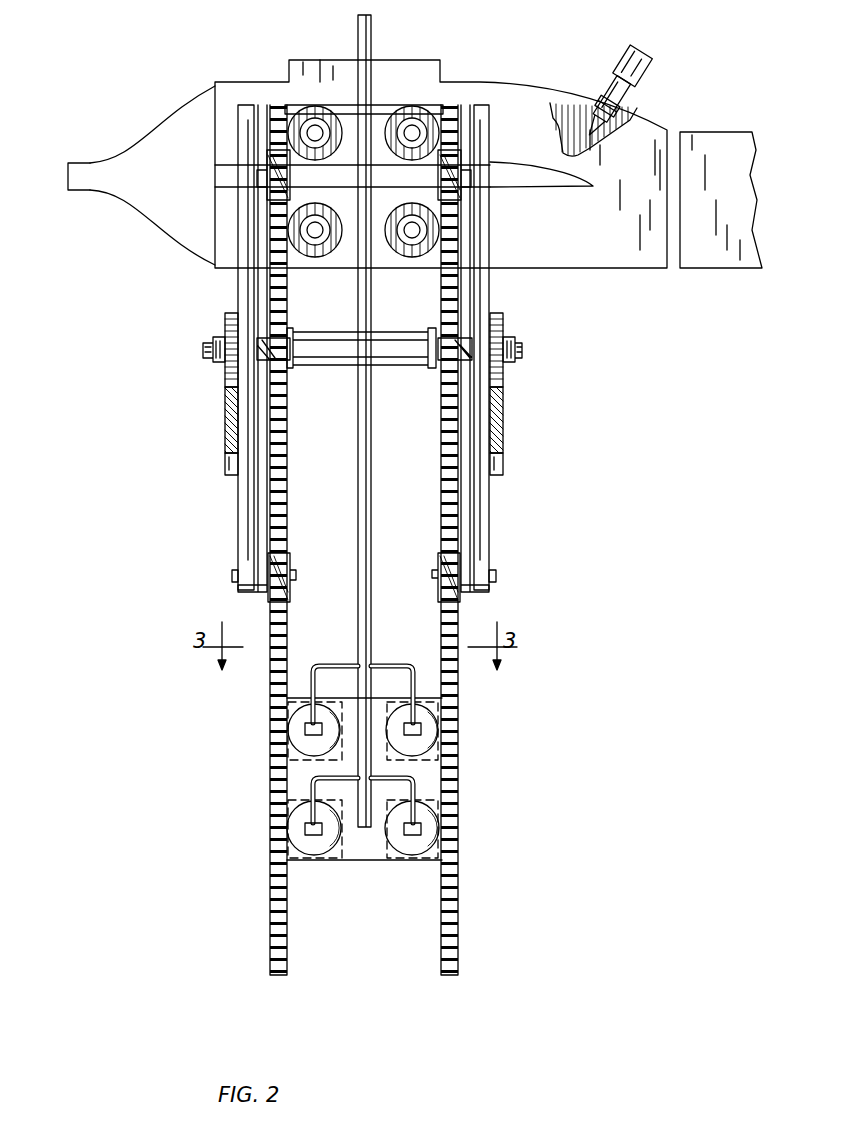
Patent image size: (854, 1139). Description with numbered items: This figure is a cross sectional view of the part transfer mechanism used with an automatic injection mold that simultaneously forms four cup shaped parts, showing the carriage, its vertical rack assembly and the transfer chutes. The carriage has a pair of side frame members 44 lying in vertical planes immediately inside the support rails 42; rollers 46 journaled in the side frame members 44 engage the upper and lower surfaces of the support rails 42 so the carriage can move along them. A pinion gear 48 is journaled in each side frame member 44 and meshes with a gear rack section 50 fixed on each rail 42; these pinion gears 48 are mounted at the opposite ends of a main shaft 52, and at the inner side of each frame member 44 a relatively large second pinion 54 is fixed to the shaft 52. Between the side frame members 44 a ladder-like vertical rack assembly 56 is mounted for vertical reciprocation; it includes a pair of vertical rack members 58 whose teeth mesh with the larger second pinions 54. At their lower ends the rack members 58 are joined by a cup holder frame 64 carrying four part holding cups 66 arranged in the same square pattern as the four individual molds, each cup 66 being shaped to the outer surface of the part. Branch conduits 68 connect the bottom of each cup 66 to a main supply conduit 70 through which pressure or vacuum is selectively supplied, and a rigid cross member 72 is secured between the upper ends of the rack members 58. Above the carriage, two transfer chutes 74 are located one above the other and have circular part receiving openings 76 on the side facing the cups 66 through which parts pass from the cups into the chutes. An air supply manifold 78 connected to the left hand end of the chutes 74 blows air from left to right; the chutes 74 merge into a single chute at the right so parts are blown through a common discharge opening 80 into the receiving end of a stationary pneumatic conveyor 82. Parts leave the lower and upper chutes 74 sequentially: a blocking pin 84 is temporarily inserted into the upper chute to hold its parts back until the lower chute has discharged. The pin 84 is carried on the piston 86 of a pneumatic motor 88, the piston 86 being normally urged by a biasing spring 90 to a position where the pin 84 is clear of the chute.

The support rail 42 is at (226, 432).
The side frame member 44 is at (245, 520).
The roller 46 is at (226, 465).
The pinion gear 48 is at (228, 320).
The gear rack section 50 is at (226, 407).
The main shaft 52 is at (340, 350).
The second pinion 54 is at (275, 327).
The vertical rack assembly 56 is at (300, 915).
The vertical rack member 58 is at (290, 740).
The cup holder frame 64 is at (360, 862).
The part holding cup 66 is at (305, 708).
The branch conduit 68 is at (345, 664).
The main supply conduit 70 is at (375, 545).
The cross member 72 is at (385, 108).
The transfer chute 74 is at (215, 88).
The part receiving opening 76 is at (322, 212).
The air supply manifold 78 is at (90, 160).
The discharge opening 80 is at (670, 125).
The pneumatic conveyor 82 is at (692, 270).
The blocking pin 84 is at (590, 180).
The piston 86 is at (640, 68).
The pneumatic motor 88 is at (605, 55).
The biasing spring 90 is at (590, 85).